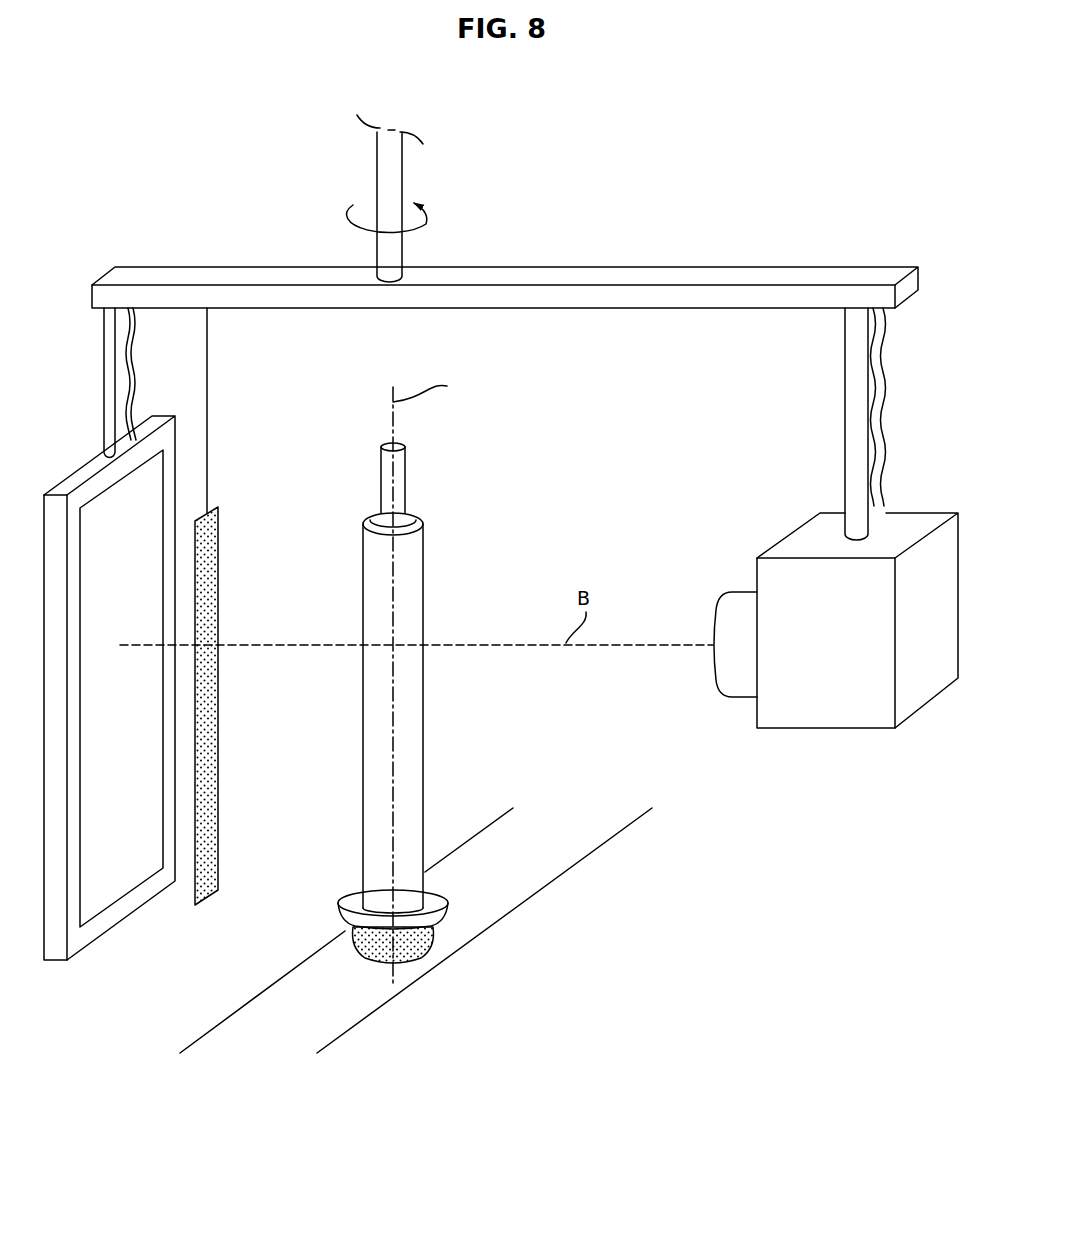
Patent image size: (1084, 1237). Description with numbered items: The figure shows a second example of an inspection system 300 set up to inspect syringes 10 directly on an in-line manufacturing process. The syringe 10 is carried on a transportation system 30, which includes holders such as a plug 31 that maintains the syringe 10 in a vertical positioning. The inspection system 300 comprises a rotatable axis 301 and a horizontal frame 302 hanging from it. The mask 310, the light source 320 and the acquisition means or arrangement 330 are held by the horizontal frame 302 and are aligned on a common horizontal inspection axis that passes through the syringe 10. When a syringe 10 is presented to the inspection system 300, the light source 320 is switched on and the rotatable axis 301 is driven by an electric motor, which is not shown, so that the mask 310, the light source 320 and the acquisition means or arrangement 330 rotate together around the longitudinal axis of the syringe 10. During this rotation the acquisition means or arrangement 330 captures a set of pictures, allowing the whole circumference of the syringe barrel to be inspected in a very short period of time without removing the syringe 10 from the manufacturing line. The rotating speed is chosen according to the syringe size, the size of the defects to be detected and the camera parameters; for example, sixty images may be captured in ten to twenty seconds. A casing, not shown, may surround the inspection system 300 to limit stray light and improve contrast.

The inspection system 300 is at (501, 543).
The rotatable axis 301 is at (374, 188).
The horizontal frame 302 is at (511, 272).
The mask 310 is at (219, 721).
The light source 320 is at (131, 916).
The acquisition means or arrangement 330 is at (832, 752).
The syringe 10 is at (448, 604).
The plug 31 is at (369, 968).
The transportation system 30 is at (504, 920).